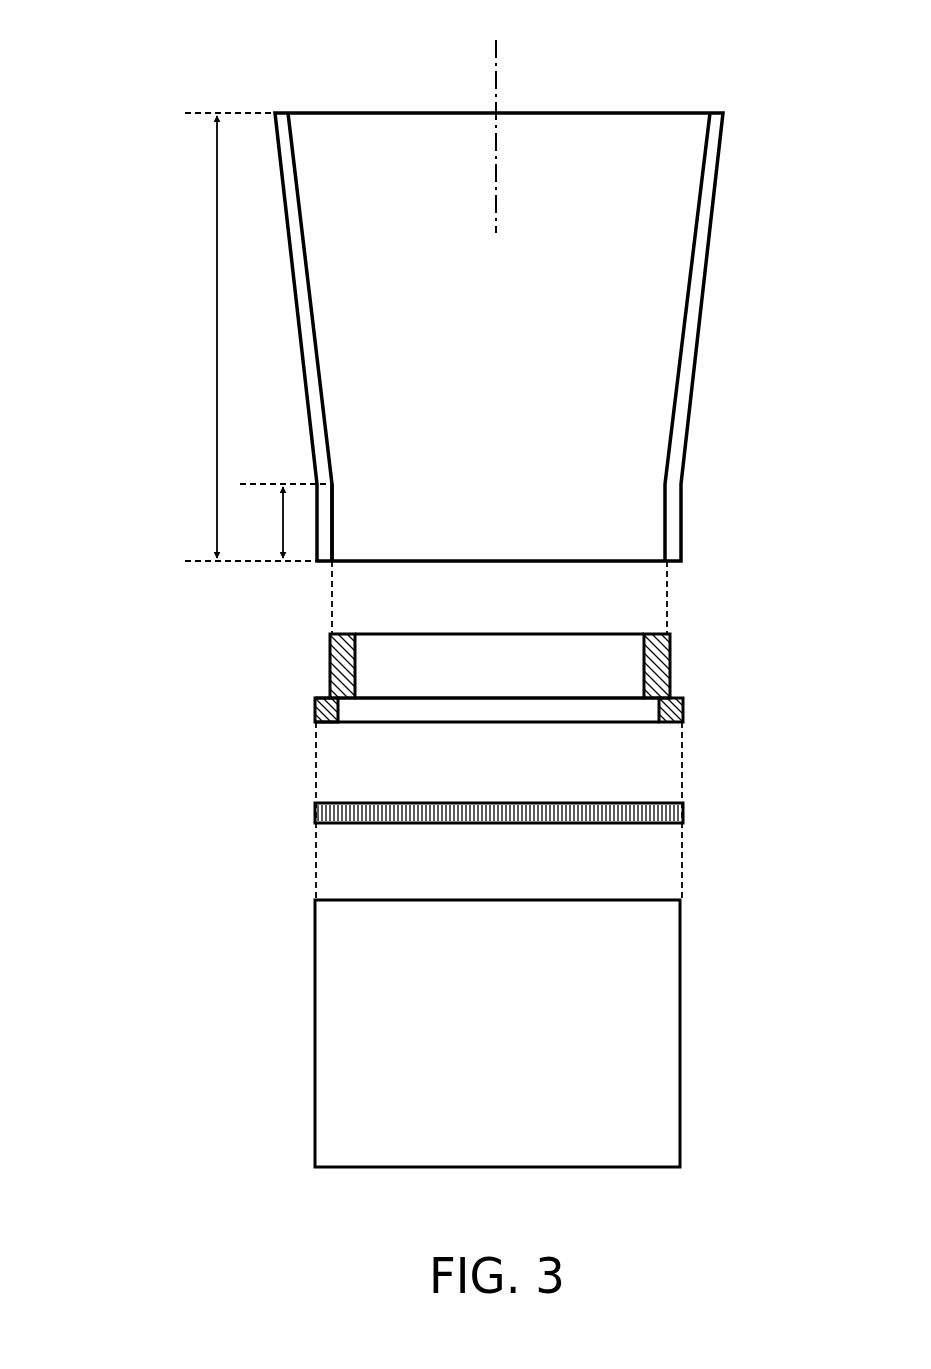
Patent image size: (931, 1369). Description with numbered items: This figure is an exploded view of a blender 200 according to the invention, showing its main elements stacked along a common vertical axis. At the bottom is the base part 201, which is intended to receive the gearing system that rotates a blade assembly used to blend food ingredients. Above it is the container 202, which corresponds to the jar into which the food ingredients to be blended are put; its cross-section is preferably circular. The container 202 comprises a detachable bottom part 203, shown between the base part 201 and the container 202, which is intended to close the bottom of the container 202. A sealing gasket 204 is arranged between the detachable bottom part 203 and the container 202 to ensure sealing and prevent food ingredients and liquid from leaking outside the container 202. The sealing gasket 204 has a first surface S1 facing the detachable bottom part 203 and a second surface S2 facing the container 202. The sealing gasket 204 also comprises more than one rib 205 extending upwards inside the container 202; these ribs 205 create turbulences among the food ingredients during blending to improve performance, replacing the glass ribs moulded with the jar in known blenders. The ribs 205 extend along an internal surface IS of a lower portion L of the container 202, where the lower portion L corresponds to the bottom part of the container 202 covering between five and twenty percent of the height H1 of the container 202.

The blender 200 is at (148, 186).
The base part 201 is at (682, 1052).
The container 202 is at (702, 297).
The detachable bottom part 203 is at (684, 812).
The sealing gasket 204 is at (314, 707).
The rib 205 is at (671, 653).
The internal surface IS is at (334, 521).
The first surface S1 is at (330, 723).
The second surface S2 is at (329, 697).
The height of the container H1 is at (249, 337).
The lower portion L is at (280, 521).